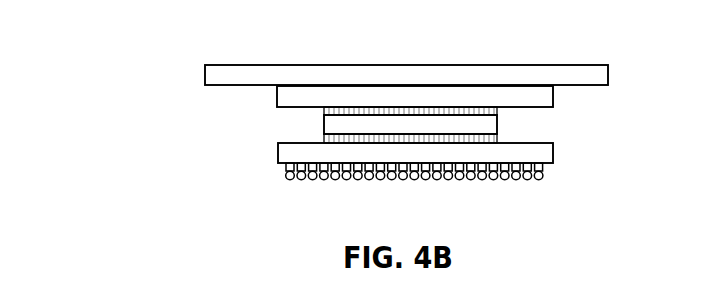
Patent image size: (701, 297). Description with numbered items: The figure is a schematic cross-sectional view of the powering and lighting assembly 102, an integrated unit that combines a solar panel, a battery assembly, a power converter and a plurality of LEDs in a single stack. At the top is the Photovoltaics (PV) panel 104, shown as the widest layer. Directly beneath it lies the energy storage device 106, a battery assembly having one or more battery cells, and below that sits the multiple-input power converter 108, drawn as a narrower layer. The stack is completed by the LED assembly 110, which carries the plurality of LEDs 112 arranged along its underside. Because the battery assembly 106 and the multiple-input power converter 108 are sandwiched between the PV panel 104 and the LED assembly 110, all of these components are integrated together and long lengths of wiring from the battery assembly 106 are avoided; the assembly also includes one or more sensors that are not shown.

The powering and lighting assembly 102 is at (110, 69).
The Photovoltaics (PV) panel 104 is at (213, 74).
The energy storage device 106 is at (284, 106).
The multiple-input power converter 108 is at (333, 129).
The LED assembly 110 is at (284, 150).
The LEDs 112 is at (290, 175).